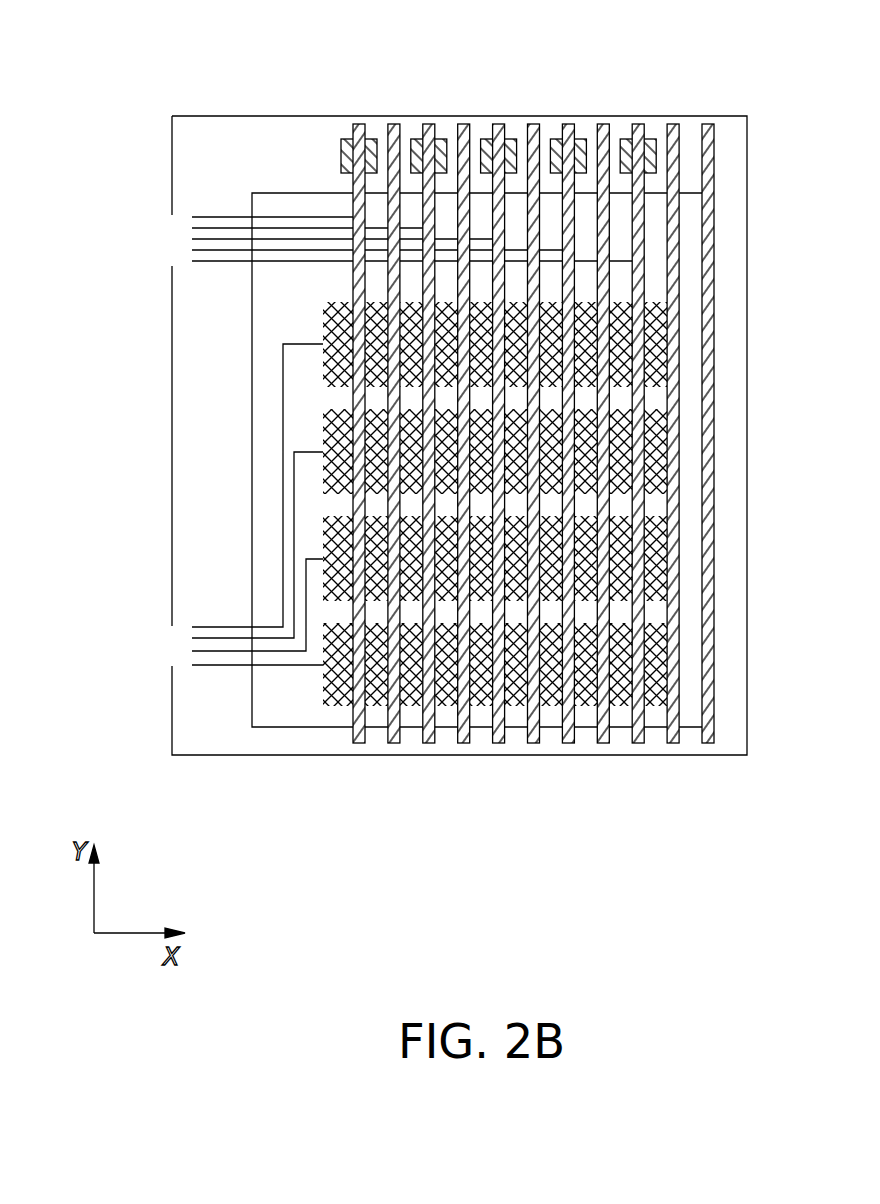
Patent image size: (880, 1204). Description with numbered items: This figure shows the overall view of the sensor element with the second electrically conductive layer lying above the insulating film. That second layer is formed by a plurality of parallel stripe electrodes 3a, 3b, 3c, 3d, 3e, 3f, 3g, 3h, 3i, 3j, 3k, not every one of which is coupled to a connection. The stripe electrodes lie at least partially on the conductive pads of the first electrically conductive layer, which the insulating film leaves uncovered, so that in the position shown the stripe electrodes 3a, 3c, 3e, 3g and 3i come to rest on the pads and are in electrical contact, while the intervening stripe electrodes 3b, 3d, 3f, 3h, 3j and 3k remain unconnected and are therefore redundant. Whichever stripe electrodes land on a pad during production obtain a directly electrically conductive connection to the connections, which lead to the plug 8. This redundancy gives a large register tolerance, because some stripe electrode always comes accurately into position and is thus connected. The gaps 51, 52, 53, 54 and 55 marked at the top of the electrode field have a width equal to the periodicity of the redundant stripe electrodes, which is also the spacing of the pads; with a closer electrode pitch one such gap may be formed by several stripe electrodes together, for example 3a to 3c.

The stripe electrode 3a is at (359, 743).
The stripe electrode 3b is at (394, 743).
The stripe electrode 3c is at (429, 743).
The stripe electrode 3d is at (464, 743).
The stripe electrode 3e is at (499, 743).
The stripe electrode 3f is at (534, 743).
The stripe electrode 3g is at (568, 743).
The stripe electrode 3h is at (603, 743).
The stripe electrode 3i is at (638, 743).
The stripe electrode 3j is at (673, 743).
The stripe electrode 3k is at (708, 743).
The plug 8 is at (178, 217).
The gap 51 is at (354, 94).
The gap 52 is at (424, 94).
The gap 53 is at (494, 94).
The gap 54 is at (564, 94).
The gap 55 is at (634, 94).